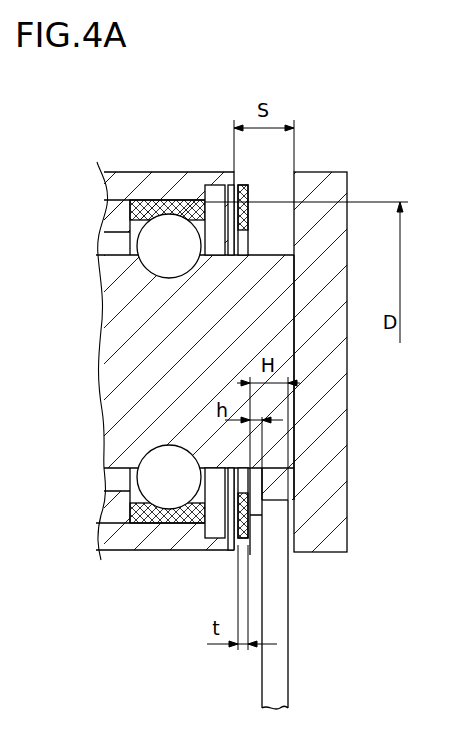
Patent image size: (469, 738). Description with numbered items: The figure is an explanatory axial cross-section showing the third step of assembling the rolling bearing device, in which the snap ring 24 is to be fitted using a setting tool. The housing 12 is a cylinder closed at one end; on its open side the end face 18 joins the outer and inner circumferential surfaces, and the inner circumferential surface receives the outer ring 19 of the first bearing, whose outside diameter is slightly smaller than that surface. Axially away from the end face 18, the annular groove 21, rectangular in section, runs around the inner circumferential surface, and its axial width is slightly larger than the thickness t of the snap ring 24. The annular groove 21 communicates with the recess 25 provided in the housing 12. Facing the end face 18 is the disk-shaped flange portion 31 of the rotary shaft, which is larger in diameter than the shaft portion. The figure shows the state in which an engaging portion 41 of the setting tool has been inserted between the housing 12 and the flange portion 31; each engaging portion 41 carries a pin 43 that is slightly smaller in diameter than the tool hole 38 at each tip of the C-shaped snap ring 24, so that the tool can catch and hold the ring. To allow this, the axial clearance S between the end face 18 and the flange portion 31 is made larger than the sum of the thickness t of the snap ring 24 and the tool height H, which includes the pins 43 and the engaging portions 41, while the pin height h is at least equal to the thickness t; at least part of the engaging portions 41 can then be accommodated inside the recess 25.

The housing 12 is at (163, 173).
The outer ring 19 is at (190, 173).
The end face 18 is at (236, 172).
The snap ring 24 is at (250, 197).
The recess 25 is at (238, 536).
The flange portion 31 is at (350, 183).
The annular groove 21 is at (205, 527).
The tool hole 38 is at (250, 540).
The pin 43 is at (263, 520).
The engaging portion 41 is at (289, 663).